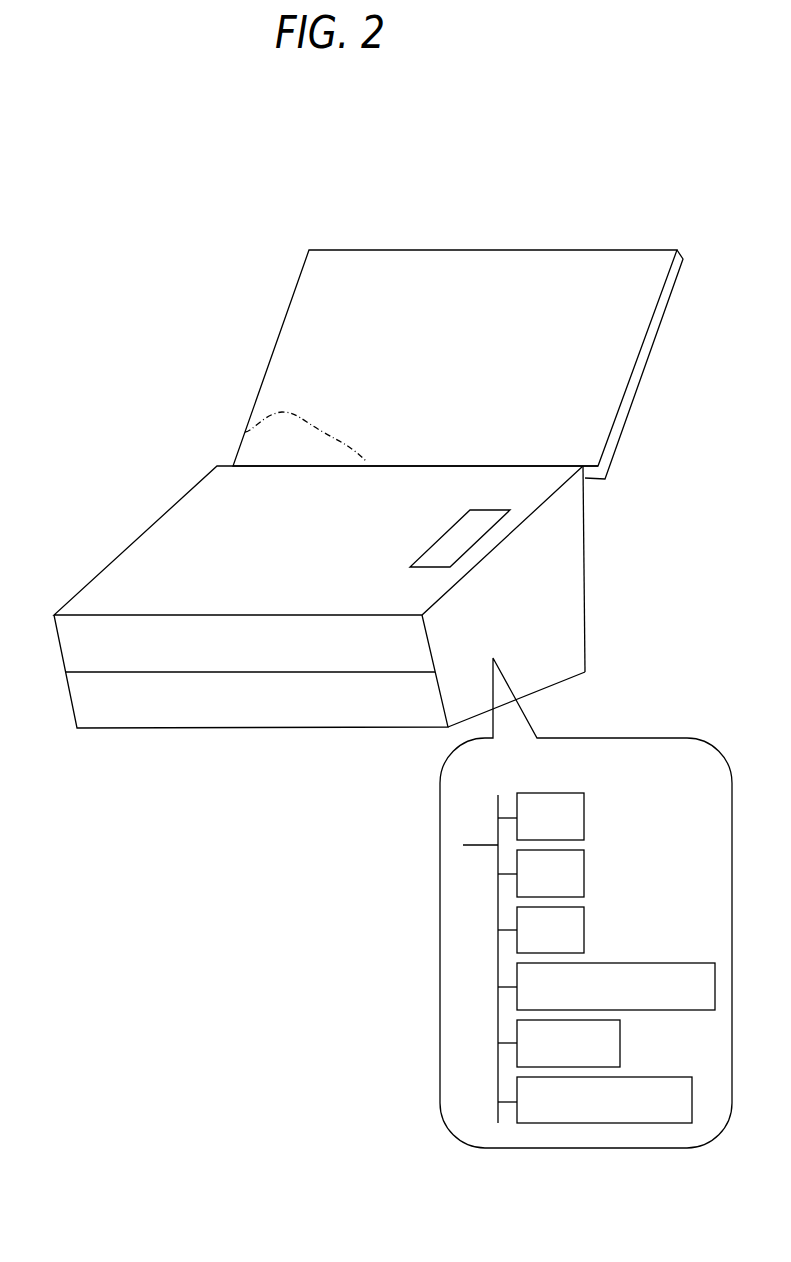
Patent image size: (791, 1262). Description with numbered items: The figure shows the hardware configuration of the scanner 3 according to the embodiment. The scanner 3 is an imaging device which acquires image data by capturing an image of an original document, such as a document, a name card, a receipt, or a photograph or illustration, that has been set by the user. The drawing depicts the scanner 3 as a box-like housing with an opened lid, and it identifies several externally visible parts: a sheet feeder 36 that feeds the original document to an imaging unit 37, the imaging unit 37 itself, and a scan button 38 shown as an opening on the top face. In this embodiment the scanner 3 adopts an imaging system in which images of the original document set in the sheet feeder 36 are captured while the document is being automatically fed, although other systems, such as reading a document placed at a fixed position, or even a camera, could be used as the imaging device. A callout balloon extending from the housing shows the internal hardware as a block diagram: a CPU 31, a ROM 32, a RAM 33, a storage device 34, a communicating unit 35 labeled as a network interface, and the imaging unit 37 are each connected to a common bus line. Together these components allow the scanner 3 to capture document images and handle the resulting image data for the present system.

The scanner 3 is at (130, 540).
The CPU 31 is at (584, 815).
The ROM 32 is at (584, 872).
The RAM 33 is at (584, 926).
The storage device 34 is at (617, 962).
The communicating unit 35 is at (621, 1066).
The sheet feeder 36 is at (245, 432).
The imaging unit 37 is at (660, 1076).
The scan button 38 is at (483, 542).